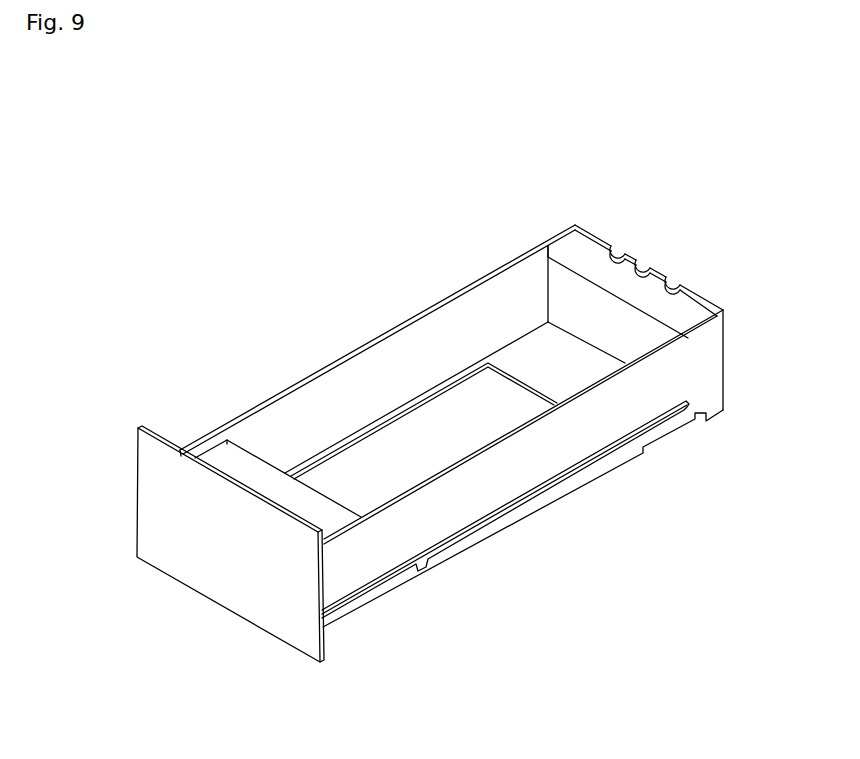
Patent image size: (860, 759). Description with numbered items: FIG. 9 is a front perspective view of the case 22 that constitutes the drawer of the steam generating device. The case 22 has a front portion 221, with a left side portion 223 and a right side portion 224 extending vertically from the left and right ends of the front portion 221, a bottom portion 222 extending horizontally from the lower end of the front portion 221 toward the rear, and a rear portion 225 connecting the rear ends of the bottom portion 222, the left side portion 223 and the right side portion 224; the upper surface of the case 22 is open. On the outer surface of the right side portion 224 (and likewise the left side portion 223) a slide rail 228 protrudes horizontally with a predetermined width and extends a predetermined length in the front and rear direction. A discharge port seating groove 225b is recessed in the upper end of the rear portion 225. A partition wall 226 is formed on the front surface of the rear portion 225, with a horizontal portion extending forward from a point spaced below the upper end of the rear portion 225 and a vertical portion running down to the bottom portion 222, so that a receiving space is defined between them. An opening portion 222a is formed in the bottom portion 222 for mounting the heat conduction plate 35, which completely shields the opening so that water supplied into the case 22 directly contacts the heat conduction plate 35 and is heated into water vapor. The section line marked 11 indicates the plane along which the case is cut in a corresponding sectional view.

The case 22 is at (358, 212).
The front portion 221 is at (268, 607).
The bottom portion 222 is at (526, 352).
The opening portion 222a is at (417, 403).
The left side portion 223 is at (470, 310).
The right side portion 224 is at (585, 440).
The rear portion 225 is at (650, 265).
The discharge port seating groove 225b is at (685, 290).
The partition wall 226 is at (587, 290).
The slide rail 228 is at (540, 500).
The heat conduction plate 35 is at (345, 468).
The section line 11 is at (650, 268).